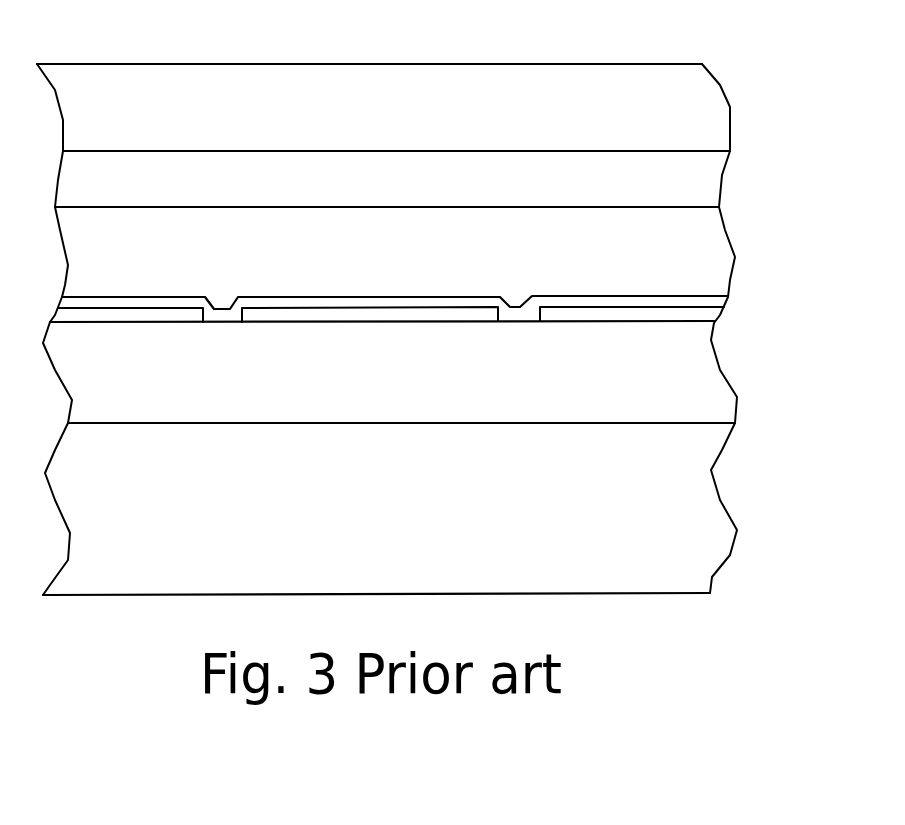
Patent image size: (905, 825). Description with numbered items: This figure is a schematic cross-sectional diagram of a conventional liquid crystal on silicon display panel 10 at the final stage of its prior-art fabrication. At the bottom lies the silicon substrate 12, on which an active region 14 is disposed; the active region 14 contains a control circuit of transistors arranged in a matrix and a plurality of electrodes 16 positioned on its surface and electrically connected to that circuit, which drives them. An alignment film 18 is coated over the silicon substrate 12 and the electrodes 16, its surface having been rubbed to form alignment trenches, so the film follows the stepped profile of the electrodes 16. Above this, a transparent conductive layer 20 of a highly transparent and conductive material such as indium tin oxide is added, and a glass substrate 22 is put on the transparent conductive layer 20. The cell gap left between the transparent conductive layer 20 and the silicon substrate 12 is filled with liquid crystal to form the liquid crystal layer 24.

The liquid crystal on silicon display panel 10 is at (826, 492).
The silicon substrate 12 is at (409, 533).
The active region 14 is at (401, 395).
The electrodes 16 is at (702, 311).
The alignment film 18 is at (710, 299).
The transparent conductive layer 20 is at (409, 190).
The glass substrate 22 is at (424, 123).
The liquid crystal layer 24 is at (409, 273).